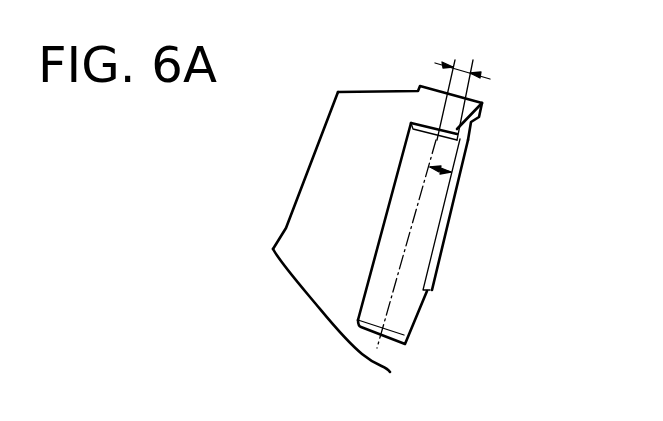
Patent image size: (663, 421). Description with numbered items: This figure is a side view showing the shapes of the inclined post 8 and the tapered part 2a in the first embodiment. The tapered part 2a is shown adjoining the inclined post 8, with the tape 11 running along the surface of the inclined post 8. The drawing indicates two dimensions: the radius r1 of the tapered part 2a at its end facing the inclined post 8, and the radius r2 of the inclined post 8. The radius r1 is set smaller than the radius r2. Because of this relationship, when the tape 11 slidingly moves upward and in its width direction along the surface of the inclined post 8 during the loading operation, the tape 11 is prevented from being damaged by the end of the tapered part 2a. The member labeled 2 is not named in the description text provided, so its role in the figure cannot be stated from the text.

The plate 2 is at (364, 92).
The tapered part 2a is at (485, 110).
The inclined post 8 is at (413, 272).
The tape 11 is at (445, 232).
The radius of the tapered part r1 is at (464, 70).
The radius of the inclined post r2 is at (449, 171).